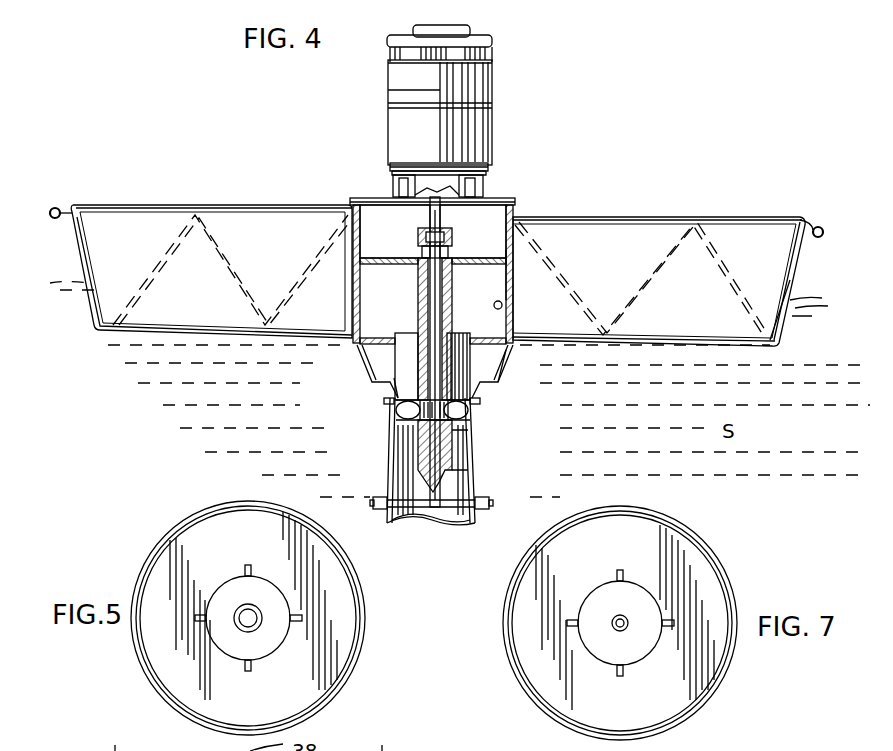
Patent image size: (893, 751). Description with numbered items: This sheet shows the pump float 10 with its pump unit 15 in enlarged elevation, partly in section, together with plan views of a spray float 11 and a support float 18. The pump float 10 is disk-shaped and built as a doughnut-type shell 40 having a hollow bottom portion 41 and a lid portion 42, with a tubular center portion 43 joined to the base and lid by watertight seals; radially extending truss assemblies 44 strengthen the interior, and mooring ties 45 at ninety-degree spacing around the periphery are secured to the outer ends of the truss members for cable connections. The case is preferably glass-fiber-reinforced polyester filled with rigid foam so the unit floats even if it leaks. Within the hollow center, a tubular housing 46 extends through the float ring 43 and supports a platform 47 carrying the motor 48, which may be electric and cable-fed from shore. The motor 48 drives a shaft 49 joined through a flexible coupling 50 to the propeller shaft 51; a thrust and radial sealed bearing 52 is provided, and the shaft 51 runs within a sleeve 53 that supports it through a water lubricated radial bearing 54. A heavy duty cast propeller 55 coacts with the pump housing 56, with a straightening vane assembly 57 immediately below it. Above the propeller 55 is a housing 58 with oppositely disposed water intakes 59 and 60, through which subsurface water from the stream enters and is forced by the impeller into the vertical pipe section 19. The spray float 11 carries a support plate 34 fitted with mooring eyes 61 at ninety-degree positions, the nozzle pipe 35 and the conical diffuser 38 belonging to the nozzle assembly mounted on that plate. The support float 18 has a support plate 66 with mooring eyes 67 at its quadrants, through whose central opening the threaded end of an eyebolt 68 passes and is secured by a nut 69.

In FIG. 4, the pump float 10 is at (652, 216).
In FIG. 5, the spray float 11 is at (352, 620).
In FIG. 4, the pump unit 15 is at (497, 137).
In FIG. 7, the support float 18 is at (696, 556).
In FIG. 4, the vertical pipe section 19 is at (470, 507).
In FIG. 5, the support plate 34 is at (263, 642).
In FIG. 5, the nozzle pipe 35 is at (243, 627).
In FIG. 5, the conical diffuser 38 is at (245, 612).
In FIG. 4, the doughnut-type shell 40 is at (810, 218).
In FIG. 4, the hollow bottom portion 41 is at (790, 286).
In FIG. 4, the lid portion 42 is at (723, 220).
In FIG. 4, the tubular center portion 43 is at (513, 270).
In FIG. 4, the truss assemblies 44 is at (633, 305).
In FIG. 4, the mooring ties 45 is at (50, 215).
In FIG. 4, the tubular housing 46 is at (512, 290).
In FIG. 4, the platform 47 is at (507, 198).
In FIG. 4, the motor 48 is at (393, 88).
In FIG. 4, the shaft 49 is at (430, 210).
In FIG. 4, the flexible coupling 50 is at (447, 236).
In FIG. 4, the propeller shaft 51 is at (442, 322).
In FIG. 4, the thrust and radial sealed bearing 52 is at (415, 262).
In FIG. 4, the sleeve 53 is at (418, 304).
In FIG. 4, the water lubricated radial bearing 54 is at (410, 378).
In FIG. 4, the propeller 55 is at (472, 420).
In FIG. 4, the pump housing 56 is at (385, 440).
In FIG. 4, the straightening vane assembly 57 is at (467, 460).
In FIG. 4, the housing 58 is at (490, 393).
In FIG. 4, the water intake 59 is at (500, 350).
In FIG. 4, the water intake 60 is at (370, 350).
In FIG. 5, the mooring eyes 61 is at (252, 566).
In FIG. 7, the support plate 66 is at (600, 600).
In FIG. 7, the mooring eyes 67 is at (570, 624).
In FIG. 7, the eyebolt 68 is at (633, 612).
In FIG. 7, the nut 69 is at (616, 630).